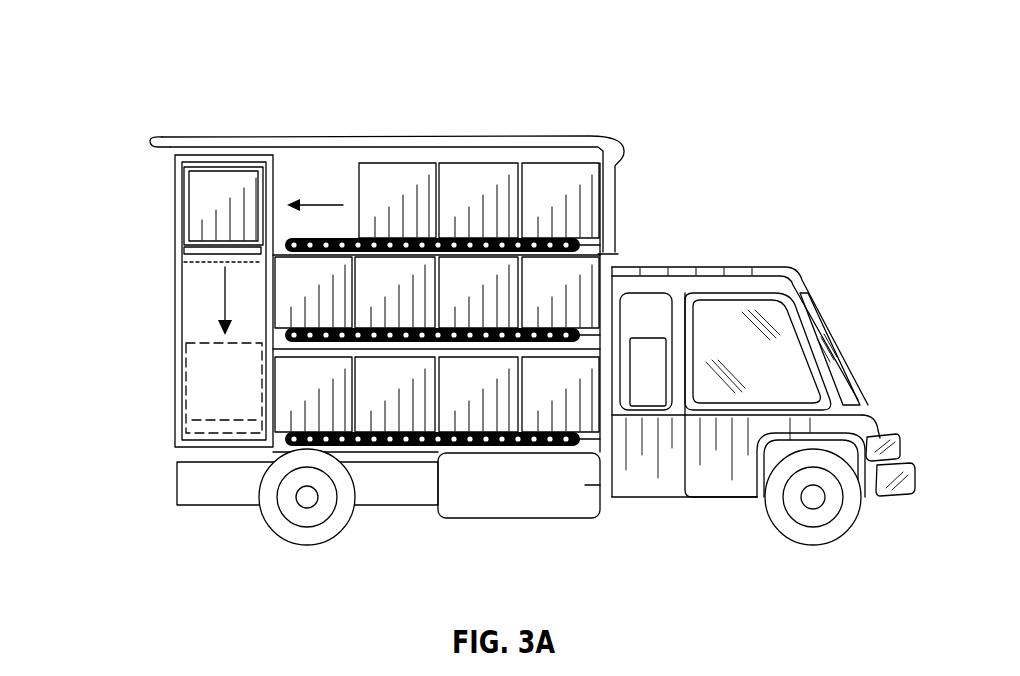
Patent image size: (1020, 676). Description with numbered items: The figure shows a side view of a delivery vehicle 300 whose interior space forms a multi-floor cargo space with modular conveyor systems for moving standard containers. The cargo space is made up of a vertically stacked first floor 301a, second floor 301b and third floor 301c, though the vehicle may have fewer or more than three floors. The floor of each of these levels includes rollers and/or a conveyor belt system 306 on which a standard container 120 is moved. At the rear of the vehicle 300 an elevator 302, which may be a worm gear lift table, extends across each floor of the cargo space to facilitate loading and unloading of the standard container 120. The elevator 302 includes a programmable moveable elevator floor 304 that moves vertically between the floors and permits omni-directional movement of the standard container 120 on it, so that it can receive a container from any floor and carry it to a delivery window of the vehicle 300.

The vehicle 300 is at (118, 32).
The conveyor belt system 306 is at (323, 244).
The standard container 120 is at (196, 206).
The elevator floor 304 is at (186, 257).
The elevator 302 is at (176, 320).
The first floor 301a is at (587, 410).
The second floor 301b is at (588, 272).
The third floor 301c is at (592, 202).